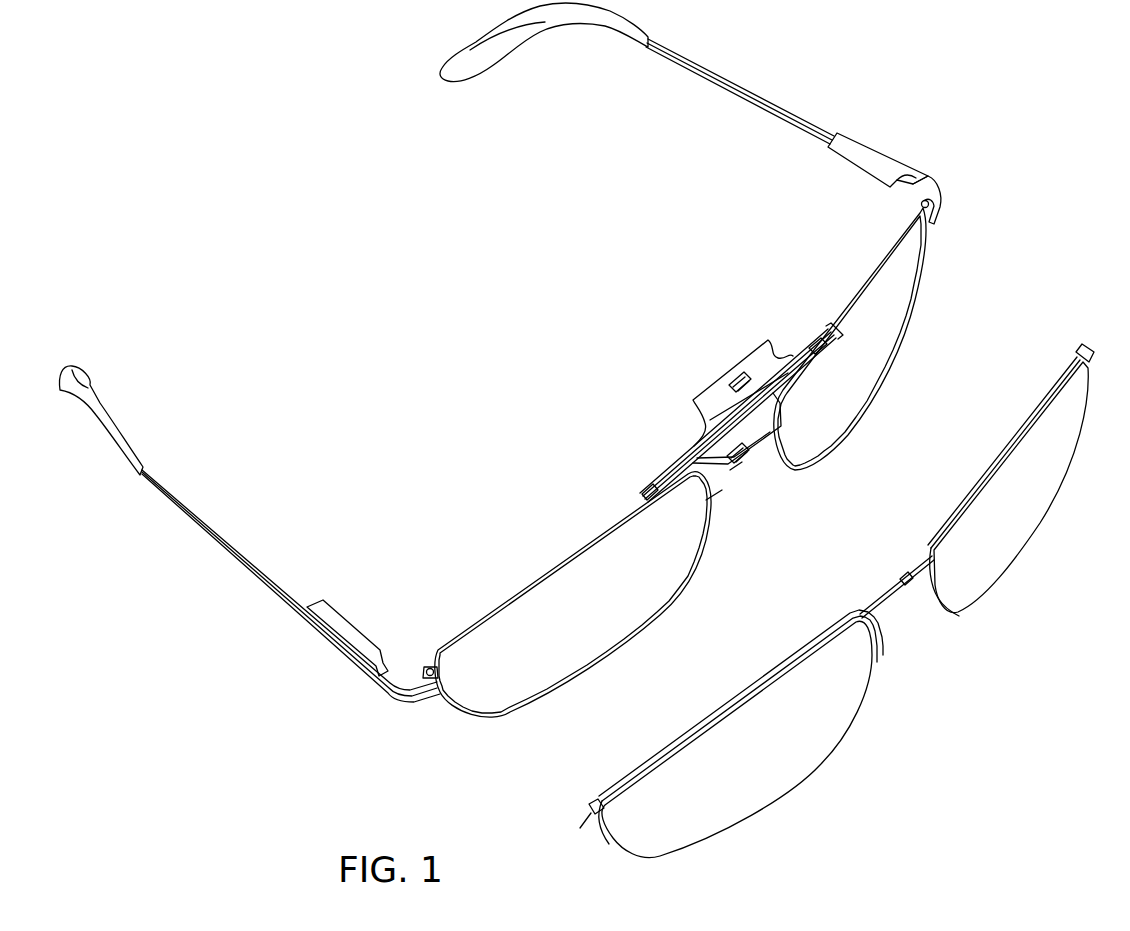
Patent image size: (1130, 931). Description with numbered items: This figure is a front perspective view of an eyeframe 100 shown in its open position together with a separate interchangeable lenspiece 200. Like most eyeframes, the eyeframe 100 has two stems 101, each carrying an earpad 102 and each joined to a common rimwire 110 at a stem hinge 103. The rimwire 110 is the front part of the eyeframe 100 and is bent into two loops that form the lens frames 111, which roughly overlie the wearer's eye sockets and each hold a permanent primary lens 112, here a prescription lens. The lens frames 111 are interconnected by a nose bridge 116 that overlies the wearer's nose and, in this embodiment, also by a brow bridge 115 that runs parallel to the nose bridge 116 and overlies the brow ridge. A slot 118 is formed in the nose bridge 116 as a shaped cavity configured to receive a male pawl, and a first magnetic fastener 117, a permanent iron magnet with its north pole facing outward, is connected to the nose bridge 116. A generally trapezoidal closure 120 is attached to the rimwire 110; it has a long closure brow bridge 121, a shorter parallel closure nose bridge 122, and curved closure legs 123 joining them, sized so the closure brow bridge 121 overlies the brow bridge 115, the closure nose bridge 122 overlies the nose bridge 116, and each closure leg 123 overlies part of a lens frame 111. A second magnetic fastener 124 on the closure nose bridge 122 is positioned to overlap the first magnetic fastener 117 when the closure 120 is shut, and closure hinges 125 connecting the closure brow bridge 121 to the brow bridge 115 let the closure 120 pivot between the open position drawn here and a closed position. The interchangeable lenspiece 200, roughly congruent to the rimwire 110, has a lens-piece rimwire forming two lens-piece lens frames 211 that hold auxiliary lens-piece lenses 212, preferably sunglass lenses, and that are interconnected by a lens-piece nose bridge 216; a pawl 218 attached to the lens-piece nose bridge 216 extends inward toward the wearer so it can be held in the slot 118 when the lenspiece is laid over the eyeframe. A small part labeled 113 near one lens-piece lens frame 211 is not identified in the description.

The eyeframe 100 is at (890, 90).
The stem 101 is at (688, 67).
The earpad 102 is at (457, 78).
The stem hinge 103 is at (918, 201).
The rimwire 110 is at (928, 342).
The lens frame 111 is at (924, 275).
The primary lens 112 is at (845, 421).
The connecting post 113 is at (591, 813).
The brow bridge 115 is at (700, 462).
The nose bridge 116 is at (718, 496).
The first magnetic fastener 117 is at (736, 466).
The slot 118 is at (752, 458).
The closure 120 is at (683, 378).
The closure brow bridge 121 is at (690, 440).
The closure nose bridge 122 is at (757, 350).
The closure leg 123 is at (812, 345).
The second magnetic fastener 124 is at (738, 375).
The closure hinge 125 is at (652, 484).
The interchangeable lenspiece 200 is at (945, 708).
The lens-piece lens frame 211 is at (1036, 541).
The lens-piece lens 212 is at (1014, 547).
The lens-piece nose bridge 216 is at (928, 565).
The pawl 218 is at (900, 578).